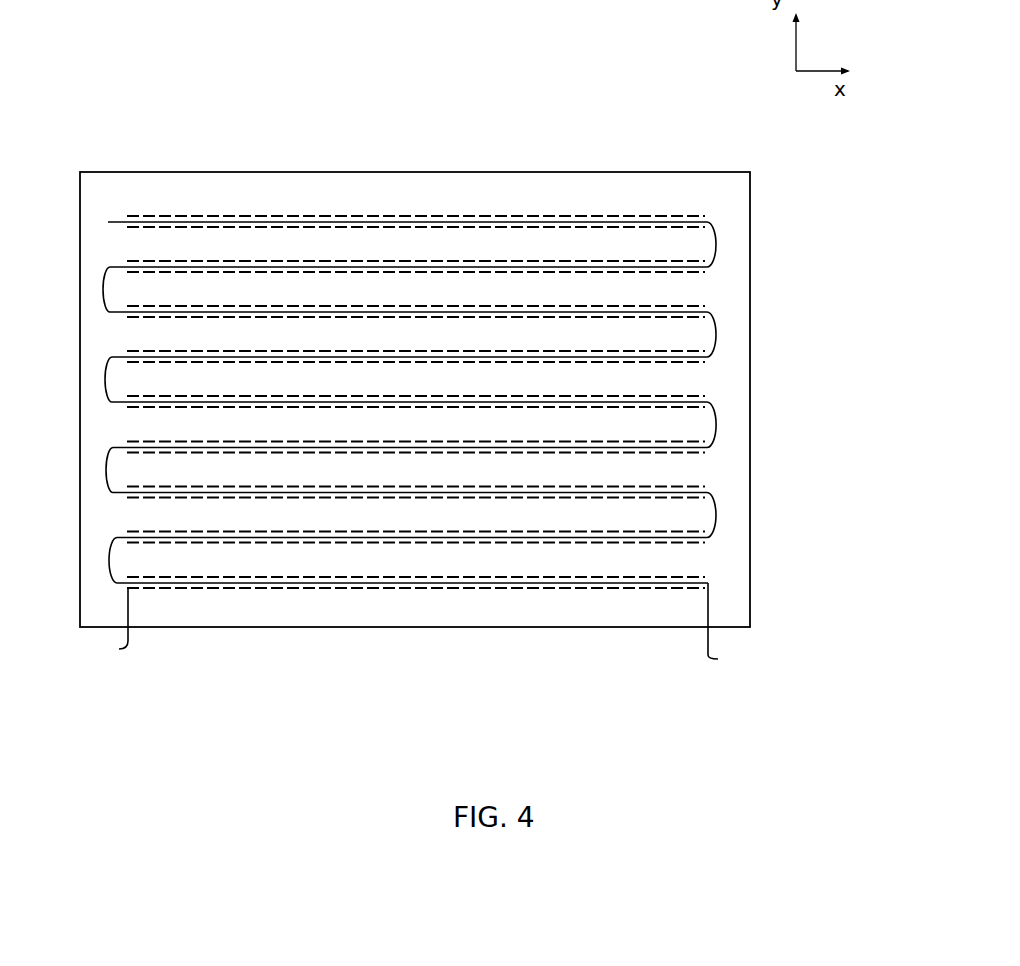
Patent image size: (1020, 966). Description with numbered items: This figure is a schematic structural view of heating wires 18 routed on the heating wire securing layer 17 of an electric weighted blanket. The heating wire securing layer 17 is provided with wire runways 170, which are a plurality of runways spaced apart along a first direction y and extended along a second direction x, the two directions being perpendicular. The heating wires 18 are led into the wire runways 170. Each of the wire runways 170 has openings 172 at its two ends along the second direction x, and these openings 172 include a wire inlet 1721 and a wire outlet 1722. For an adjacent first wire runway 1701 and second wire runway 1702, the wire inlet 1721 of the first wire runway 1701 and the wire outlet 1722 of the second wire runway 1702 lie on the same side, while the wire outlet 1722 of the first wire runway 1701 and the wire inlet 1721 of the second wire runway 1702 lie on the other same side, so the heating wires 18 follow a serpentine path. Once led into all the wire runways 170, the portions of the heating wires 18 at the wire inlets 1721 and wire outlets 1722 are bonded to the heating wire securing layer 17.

The heating wire securing layer 17 is at (580, 180).
The heating wires 18 is at (712, 241).
The wire runways 170 is at (497, 403).
The first wire runway 1701 is at (695, 586).
The second wire runway 1702 is at (689, 538).
The openings 172 is at (472, 442).
The wire inlet 1721 is at (132, 544).
The wire outlet 1722 is at (212, 671).